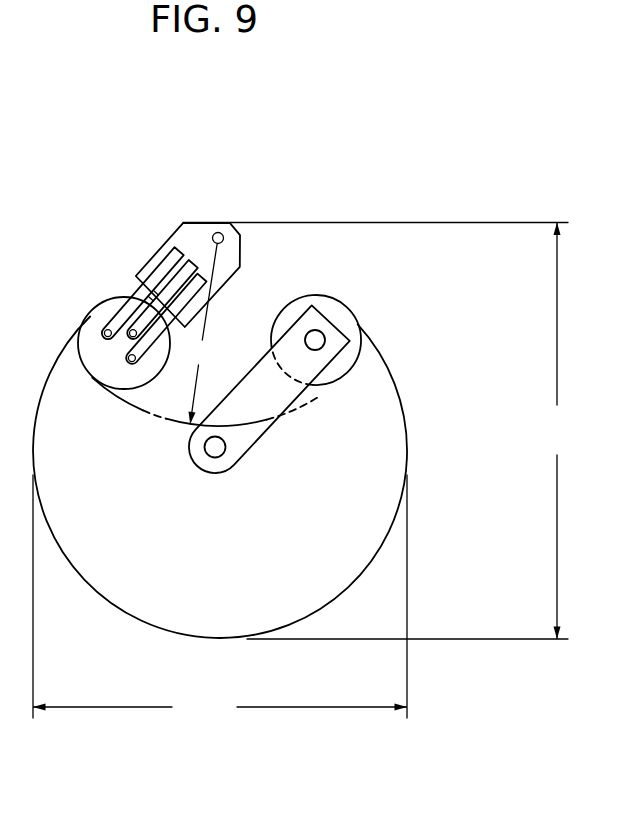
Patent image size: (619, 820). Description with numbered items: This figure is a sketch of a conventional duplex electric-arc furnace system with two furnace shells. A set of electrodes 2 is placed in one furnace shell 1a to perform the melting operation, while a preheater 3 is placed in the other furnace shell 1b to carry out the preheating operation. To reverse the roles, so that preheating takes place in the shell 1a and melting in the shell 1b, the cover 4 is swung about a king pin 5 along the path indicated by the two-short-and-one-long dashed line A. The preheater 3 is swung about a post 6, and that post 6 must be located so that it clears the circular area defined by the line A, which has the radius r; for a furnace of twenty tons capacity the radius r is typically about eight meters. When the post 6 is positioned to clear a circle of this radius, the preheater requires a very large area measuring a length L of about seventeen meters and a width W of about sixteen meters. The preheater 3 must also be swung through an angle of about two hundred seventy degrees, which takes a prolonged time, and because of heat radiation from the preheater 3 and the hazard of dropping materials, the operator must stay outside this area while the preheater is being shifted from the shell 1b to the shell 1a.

The furnace shell 1a is at (131, 297).
The furnace shell 1b is at (316, 295).
The electrodes 2 is at (103, 329).
The preheater 3 is at (357, 296).
The cover 4 is at (105, 302).
The king pin 5 is at (218, 232).
The post 6 is at (208, 456).
The two-short-and-one-long dashed line A is at (143, 412).
The radius r is at (203, 334).
The length L is at (375, 431).
The width W is at (220, 598).